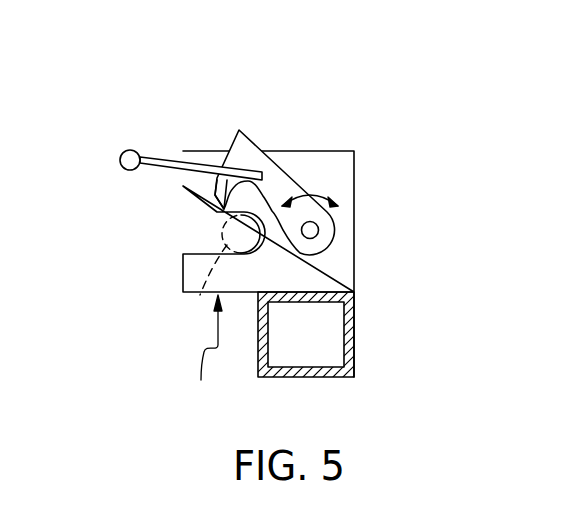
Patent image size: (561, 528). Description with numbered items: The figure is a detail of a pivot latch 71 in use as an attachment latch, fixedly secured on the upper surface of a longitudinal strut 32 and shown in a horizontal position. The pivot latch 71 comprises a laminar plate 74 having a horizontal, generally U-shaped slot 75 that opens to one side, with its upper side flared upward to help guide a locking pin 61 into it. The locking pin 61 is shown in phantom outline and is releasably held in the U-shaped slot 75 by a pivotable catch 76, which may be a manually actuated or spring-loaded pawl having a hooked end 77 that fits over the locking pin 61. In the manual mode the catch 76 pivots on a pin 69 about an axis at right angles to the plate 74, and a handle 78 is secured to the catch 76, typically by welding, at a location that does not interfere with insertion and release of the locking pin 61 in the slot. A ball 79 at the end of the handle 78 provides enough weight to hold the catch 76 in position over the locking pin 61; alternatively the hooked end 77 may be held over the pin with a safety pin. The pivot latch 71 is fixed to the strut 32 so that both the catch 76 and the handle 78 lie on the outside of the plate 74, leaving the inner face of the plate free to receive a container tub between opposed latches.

The strut 32 is at (355, 331).
The locking pin 61 is at (196, 290).
The pin 69 is at (318, 230).
The pivot latch 71 is at (203, 356).
The laminar plate 74 is at (343, 185).
The U-shaped slot 75 is at (208, 250).
The pivotable catch 76 is at (278, 163).
The hooked end 77 is at (217, 211).
The handle 78 is at (166, 155).
The ball 79 is at (141, 150).